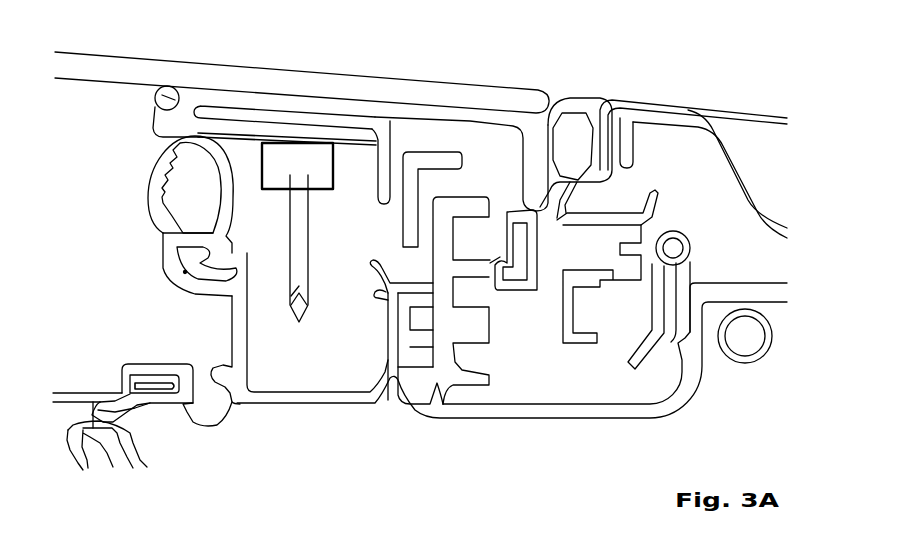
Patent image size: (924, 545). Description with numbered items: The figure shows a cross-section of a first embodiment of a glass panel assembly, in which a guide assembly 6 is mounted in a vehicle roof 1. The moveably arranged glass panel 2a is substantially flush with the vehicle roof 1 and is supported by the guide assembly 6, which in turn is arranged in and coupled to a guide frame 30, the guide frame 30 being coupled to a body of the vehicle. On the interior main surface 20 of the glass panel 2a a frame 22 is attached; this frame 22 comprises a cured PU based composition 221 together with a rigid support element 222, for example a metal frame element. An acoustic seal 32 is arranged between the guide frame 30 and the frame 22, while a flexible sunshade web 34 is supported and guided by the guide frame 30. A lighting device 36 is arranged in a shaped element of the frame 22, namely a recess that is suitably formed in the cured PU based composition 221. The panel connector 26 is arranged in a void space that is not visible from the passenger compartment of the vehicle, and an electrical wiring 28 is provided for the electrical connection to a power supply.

The vehicle roof 1 is at (690, 112).
The glass panel 2a is at (145, 73).
The guide assembly 6 is at (481, 174).
The interior main surface 20 is at (80, 104).
The frame 22 is at (247, 152).
The panel connector 26 is at (318, 165).
The electrical wiring 28 is at (300, 285).
The guide frame 30 is at (360, 397).
The acoustic seal 32 is at (160, 218).
The flexible sunshade web 34 is at (76, 393).
The lighting device 36 is at (180, 92).
The cured PU based composition 221 is at (252, 105).
The rigid support element 222 is at (305, 120).